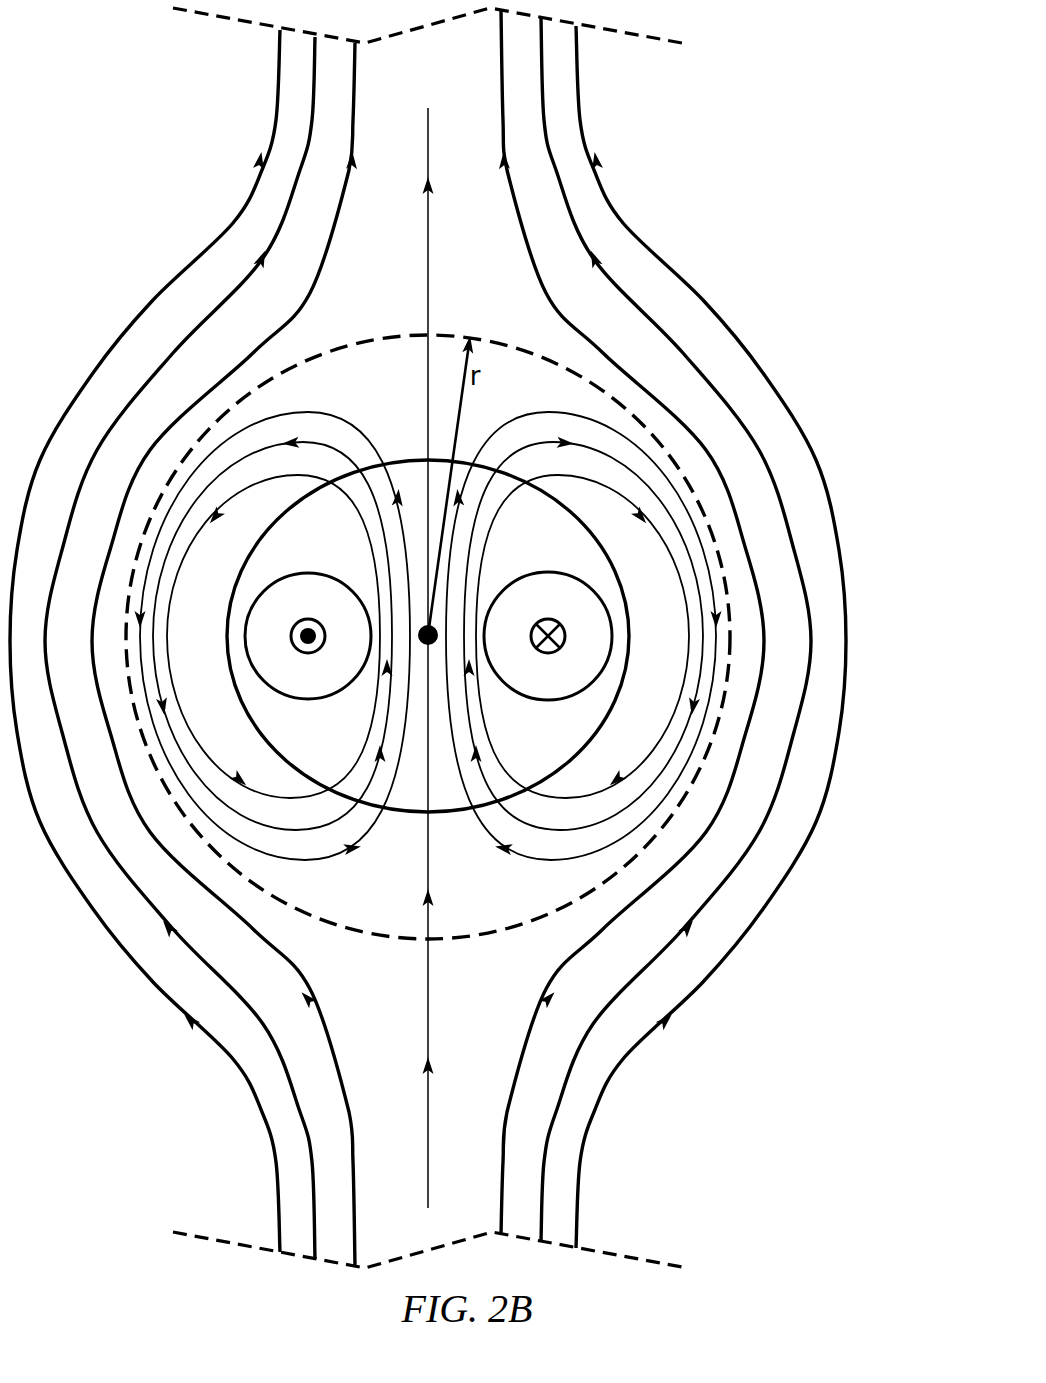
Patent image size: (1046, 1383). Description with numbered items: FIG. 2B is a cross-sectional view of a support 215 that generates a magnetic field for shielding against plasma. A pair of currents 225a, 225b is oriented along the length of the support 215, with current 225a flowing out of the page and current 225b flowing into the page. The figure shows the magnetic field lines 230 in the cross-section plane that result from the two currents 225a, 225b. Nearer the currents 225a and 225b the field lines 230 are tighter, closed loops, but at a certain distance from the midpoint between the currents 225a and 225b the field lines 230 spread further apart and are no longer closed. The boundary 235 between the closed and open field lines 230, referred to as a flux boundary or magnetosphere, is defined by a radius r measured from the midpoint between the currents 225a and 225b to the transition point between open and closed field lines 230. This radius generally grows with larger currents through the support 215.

The support 215 is at (398, 458).
The current 225a is at (308, 636).
The current 225b is at (548, 636).
The magnetic field lines 230 is at (153, 300).
The boundary 235 is at (687, 480).